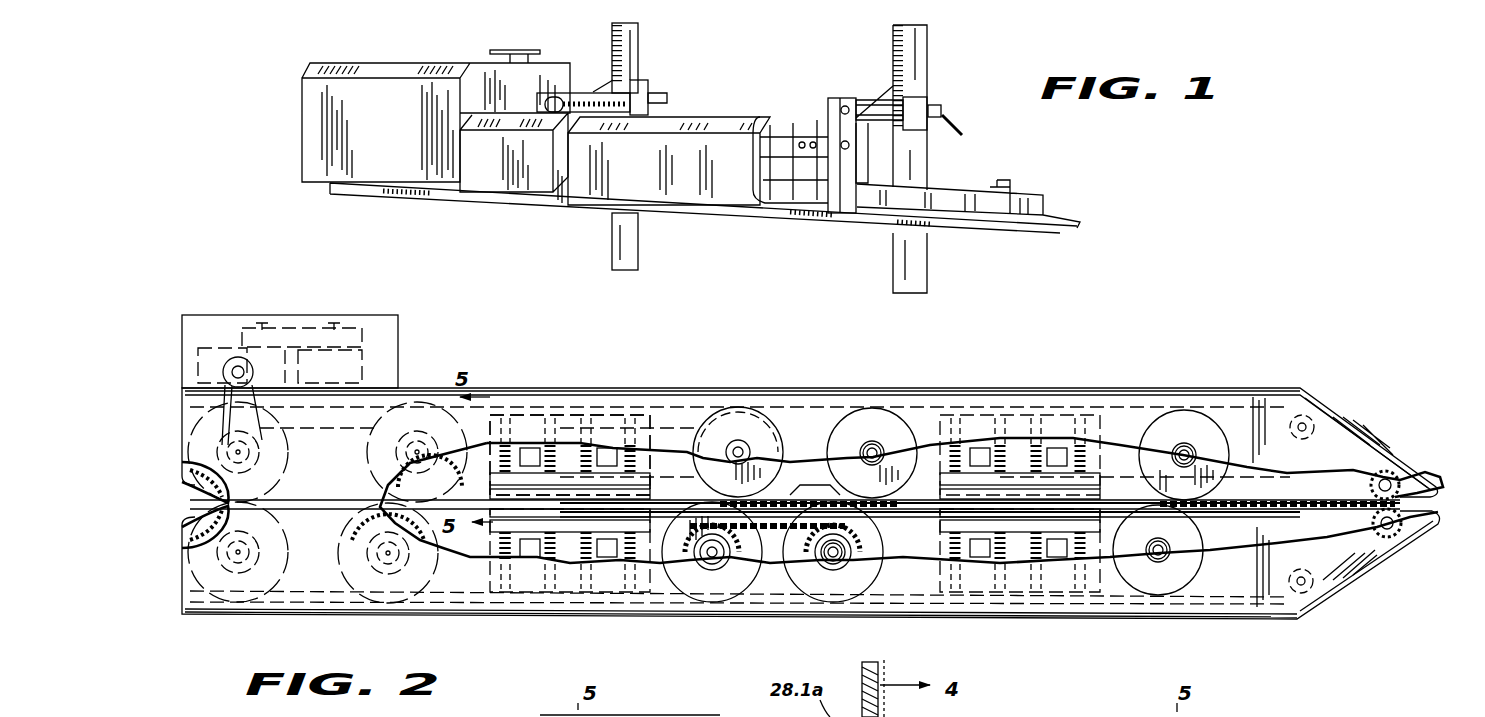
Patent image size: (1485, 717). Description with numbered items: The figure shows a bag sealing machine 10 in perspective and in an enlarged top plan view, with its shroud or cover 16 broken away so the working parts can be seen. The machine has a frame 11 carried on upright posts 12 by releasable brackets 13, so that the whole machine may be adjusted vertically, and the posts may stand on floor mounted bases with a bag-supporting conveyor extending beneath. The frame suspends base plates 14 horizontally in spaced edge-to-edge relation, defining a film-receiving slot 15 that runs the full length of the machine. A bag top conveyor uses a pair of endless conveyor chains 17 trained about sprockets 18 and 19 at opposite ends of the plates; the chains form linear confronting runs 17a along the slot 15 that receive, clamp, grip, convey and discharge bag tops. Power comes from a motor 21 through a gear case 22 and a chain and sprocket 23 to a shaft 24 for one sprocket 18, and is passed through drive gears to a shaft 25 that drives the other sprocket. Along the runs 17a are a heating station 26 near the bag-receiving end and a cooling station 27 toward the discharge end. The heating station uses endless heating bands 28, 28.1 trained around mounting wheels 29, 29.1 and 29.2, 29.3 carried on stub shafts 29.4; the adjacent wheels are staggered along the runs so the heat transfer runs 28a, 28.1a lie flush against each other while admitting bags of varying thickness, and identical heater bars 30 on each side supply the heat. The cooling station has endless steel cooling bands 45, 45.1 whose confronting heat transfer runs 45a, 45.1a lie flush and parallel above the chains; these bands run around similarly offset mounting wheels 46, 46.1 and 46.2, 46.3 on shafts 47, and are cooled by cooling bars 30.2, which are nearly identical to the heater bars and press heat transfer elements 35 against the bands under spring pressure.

In FIG. 1, the sealing machine 10 is at (952, 160).
In FIG. 1, the frame 11 is at (845, 195).
In FIG. 1, the upright posts 12 is at (910, 263).
In FIG. 1, the releasable brackets 13 is at (927, 104).
In FIG. 1, the base plates 14 is at (990, 230).
In FIG. 2, the base plates 14 is at (1310, 490).
In FIG. 2, the film-receiving slot 15 is at (1440, 505).
In FIG. 1, the shroud or cover 16 is at (683, 150).
In FIG. 2, the endless conveyor chains 17 is at (920, 605).
In FIG. 2, the linear confronting runs 17a is at (1292, 508).
In FIG. 2, the sprockets 18 is at (212, 500).
In FIG. 2, the sprockets 19 is at (1388, 483).
In FIG. 2, the motor 21 is at (352, 358).
In FIG. 2, the gear case 22 is at (237, 365).
In FIG. 2, the chain and sprocket 23 is at (184, 407).
In FIG. 2, the shaft 24 is at (228, 453).
In FIG. 2, the shaft 25 is at (228, 562).
In FIG. 2, the heating station 26 is at (1133, 420).
In FIG. 2, the cooling station 27 is at (622, 412).
In FIG. 2, the heating band 28 is at (920, 498).
In FIG. 2, the heat transfer run 28a is at (1150, 471).
In FIG. 2, the heating band 28.1 is at (932, 504).
In FIG. 2, the heat transfer run 28.1a is at (1151, 539).
In FIG. 2, the mounting wheel 29 is at (1184, 455).
In FIG. 2, the mounting wheel 29.1 is at (872, 453).
In FIG. 2, the mounting wheel 29.2 is at (1158, 550).
In FIG. 2, the mounting wheel 29.3 is at (872, 560).
In FIG. 2, the stub shafts 29.4 is at (835, 558).
In FIG. 2, the heater bars 30 is at (1018, 478).
In FIG. 2, the cooling bars 30.2 is at (566, 478).
In FIG. 2, the heat transfer elements 35 is at (512, 514).
In FIG. 2, the cooling band 45 is at (385, 452).
In FIG. 2, the heat transfer run 45a is at (660, 498).
In FIG. 2, the cooling band 45.1 is at (357, 497).
In FIG. 2, the heat transfer run 45.1a is at (667, 512).
In FIG. 2, the mounting wheel 46 is at (760, 478).
In FIG. 2, the mounting wheel 46.1 is at (470, 462).
In FIG. 2, the mounting wheel 46.2 is at (752, 580).
In FIG. 2, the mounting wheel 46.3 is at (385, 535).
In FIG. 2, the shafts 47 is at (392, 560).